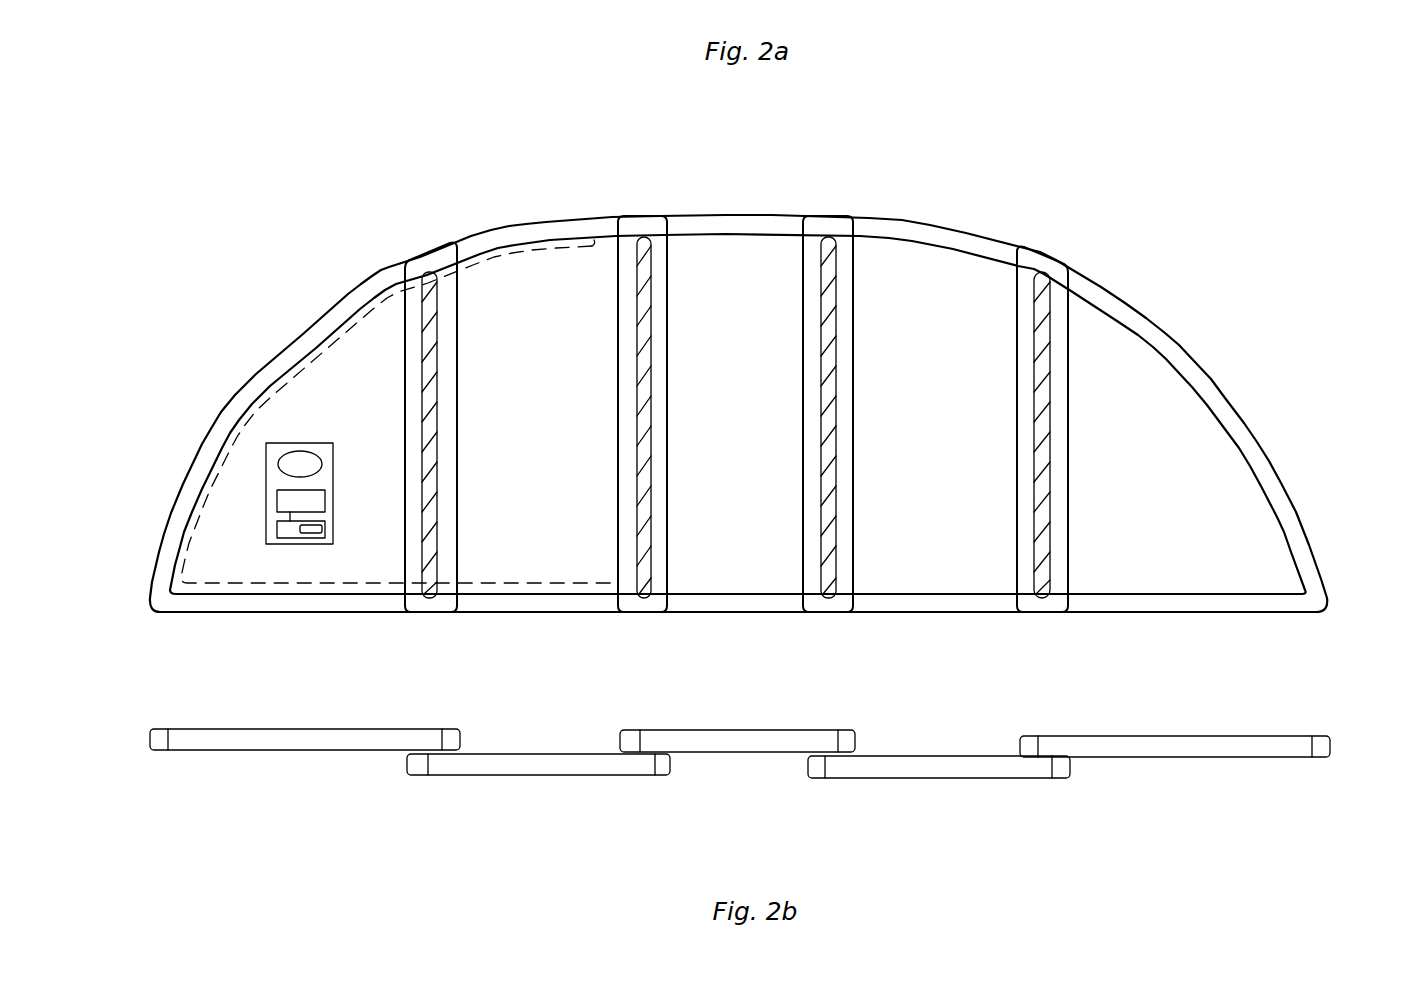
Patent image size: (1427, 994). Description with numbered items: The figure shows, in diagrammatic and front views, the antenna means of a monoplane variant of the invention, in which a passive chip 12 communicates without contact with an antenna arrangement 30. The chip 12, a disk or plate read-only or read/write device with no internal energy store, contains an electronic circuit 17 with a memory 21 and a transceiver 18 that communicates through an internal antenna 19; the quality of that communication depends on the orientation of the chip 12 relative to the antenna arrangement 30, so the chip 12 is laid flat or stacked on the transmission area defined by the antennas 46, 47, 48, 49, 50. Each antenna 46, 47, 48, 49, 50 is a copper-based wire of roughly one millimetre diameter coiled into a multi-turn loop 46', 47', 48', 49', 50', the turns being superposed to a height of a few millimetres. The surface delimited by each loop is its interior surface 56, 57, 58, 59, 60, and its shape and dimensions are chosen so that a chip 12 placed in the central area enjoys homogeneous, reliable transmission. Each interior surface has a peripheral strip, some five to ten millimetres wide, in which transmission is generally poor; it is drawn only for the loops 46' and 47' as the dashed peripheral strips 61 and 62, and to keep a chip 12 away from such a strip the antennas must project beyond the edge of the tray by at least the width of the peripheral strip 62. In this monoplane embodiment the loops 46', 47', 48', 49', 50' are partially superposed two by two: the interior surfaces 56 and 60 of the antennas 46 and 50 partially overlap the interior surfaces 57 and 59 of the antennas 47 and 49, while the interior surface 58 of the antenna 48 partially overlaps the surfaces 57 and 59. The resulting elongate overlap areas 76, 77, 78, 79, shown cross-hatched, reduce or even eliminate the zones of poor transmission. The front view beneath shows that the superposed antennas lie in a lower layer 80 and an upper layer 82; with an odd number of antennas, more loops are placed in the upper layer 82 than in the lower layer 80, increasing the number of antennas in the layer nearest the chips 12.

In FIG. 2A, the antenna arrangement 30 is at (590, 170).
In FIG. 2A, the chip 12 is at (260, 478).
In FIG. 2A, the electronic circuit 17 is at (277, 527).
In FIG. 2A, the transceiver 18 is at (287, 500).
In FIG. 2A, the internal antenna 19 is at (322, 464).
In FIG. 2A, the memory 21 is at (333, 522).
In FIG. 2B, the antenna 46 is at (305, 685).
In FIG. 2B, the antenna 47 is at (538, 697).
In FIG. 2B, the antenna 48 is at (737, 686).
In FIG. 2B, the antenna 49 is at (939, 699).
In FIG. 2B, the antenna 50 is at (1175, 688).
In FIG. 2A, the loop 46' is at (312, 298).
In FIG. 2A, the loop 47' is at (468, 390).
In FIG. 2A, the loop 48' is at (692, 390).
In FIG. 2A, the loop 49' is at (888, 394).
In FIG. 2A, the loop 50' is at (1134, 429).
In FIG. 2A, the interior surface 56 is at (359, 360).
In FIG. 2A, the interior surface 57 is at (519, 360).
In FIG. 2A, the interior surface 58 is at (722, 360).
In FIG. 2A, the interior surface 59 is at (919, 360).
In FIG. 2A, the interior surface 60 is at (1087, 365).
In FIG. 2A, the peripheral strip 61 is at (380, 297).
In FIG. 2A, the peripheral strip 62 is at (590, 240).
In FIG. 2A, the overlap area 76 is at (438, 404).
In FIG. 2A, the overlap area 77 is at (652, 406).
In FIG. 2A, the overlap area 78 is at (838, 406).
In FIG. 2A, the overlap area 79 is at (1052, 406).
In FIG. 2B, the lower layer 80 is at (1351, 762).
In FIG. 2B, the upper layer 82 is at (1351, 737).